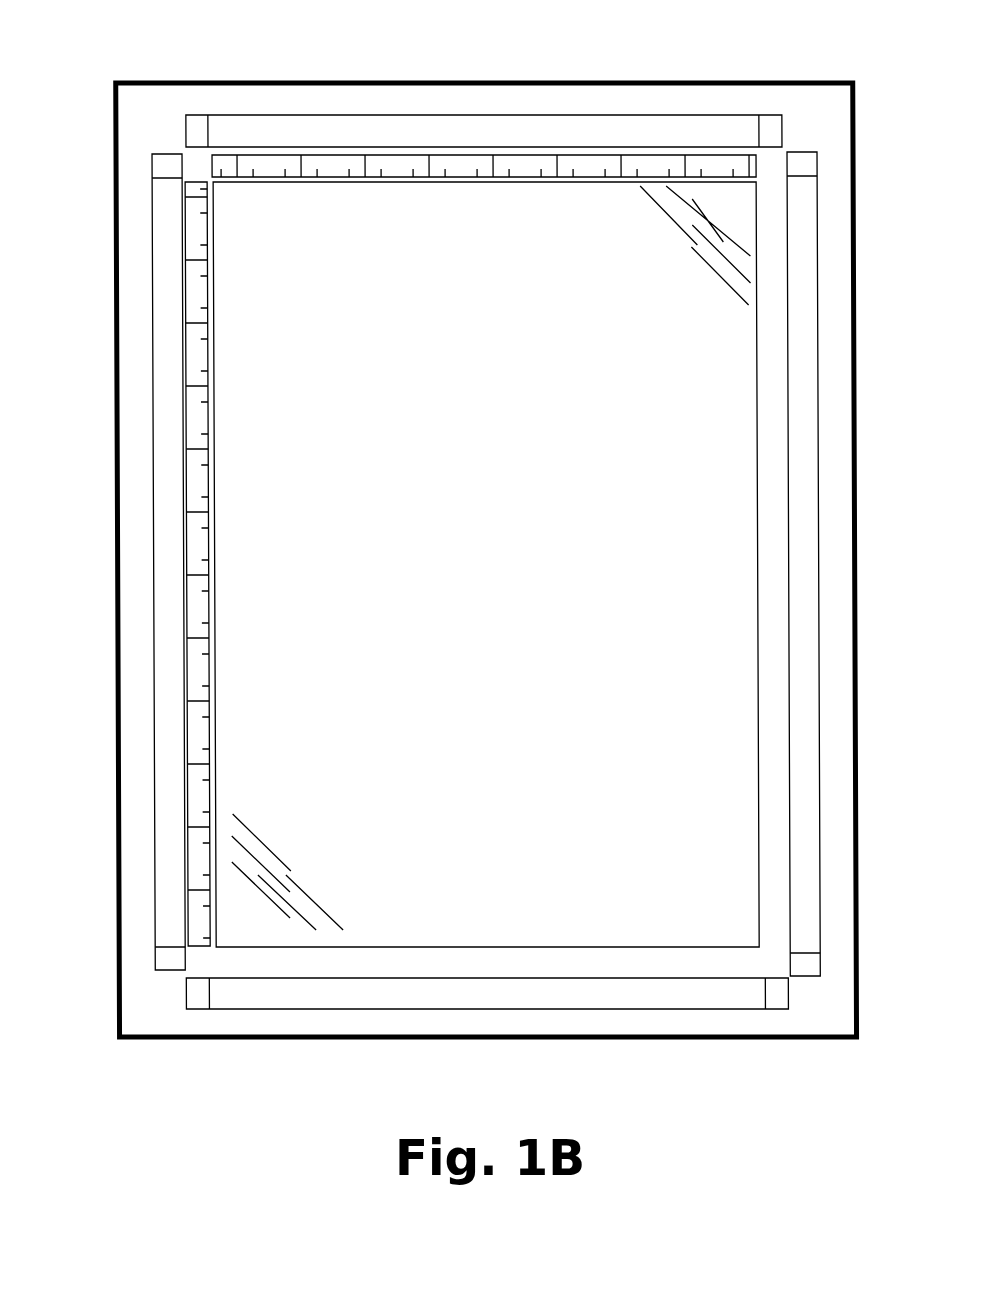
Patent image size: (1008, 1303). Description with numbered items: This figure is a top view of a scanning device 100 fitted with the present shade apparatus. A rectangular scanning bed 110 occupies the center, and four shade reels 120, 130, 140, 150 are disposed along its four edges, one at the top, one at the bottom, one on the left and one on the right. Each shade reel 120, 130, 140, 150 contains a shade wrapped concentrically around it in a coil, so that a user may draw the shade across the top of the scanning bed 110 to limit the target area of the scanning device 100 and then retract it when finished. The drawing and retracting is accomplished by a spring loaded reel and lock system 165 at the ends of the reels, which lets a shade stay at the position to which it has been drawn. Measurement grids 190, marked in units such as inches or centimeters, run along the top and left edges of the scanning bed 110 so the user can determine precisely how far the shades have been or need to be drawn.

The scanning device 100 is at (163, 996).
The scanning bed 110 is at (657, 899).
The shade reel 120 is at (727, 131).
The shade reel 130 is at (242, 997).
The shade reel 140 is at (164, 289).
The shade reel 150 is at (810, 828).
The spring loaded reel and lock system 165 is at (160, 165).
The measurement grids 190 is at (312, 165).